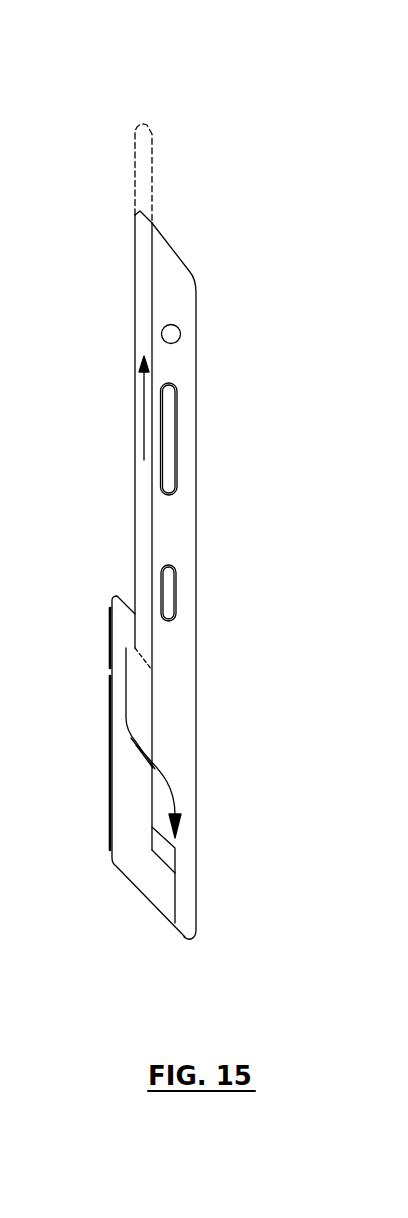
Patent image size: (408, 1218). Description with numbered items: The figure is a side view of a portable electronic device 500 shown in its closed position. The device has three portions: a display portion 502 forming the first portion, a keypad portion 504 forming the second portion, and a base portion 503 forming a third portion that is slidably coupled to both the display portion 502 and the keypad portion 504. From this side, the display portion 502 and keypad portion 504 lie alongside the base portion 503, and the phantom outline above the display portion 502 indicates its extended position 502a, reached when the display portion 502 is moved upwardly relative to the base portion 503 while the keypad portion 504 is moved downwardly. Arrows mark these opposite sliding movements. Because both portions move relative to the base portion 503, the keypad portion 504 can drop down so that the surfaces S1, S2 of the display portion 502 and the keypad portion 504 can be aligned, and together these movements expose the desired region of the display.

The portable electronic device 500 is at (232, 136).
The display portion 502 is at (142, 211).
The extended position 502a is at (136, 144).
The base portion 503 is at (172, 277).
The keypad portion 504 is at (122, 853).
The surface of the display portion S1 is at (133, 491).
The surface of the keypad portion S2 is at (108, 735).